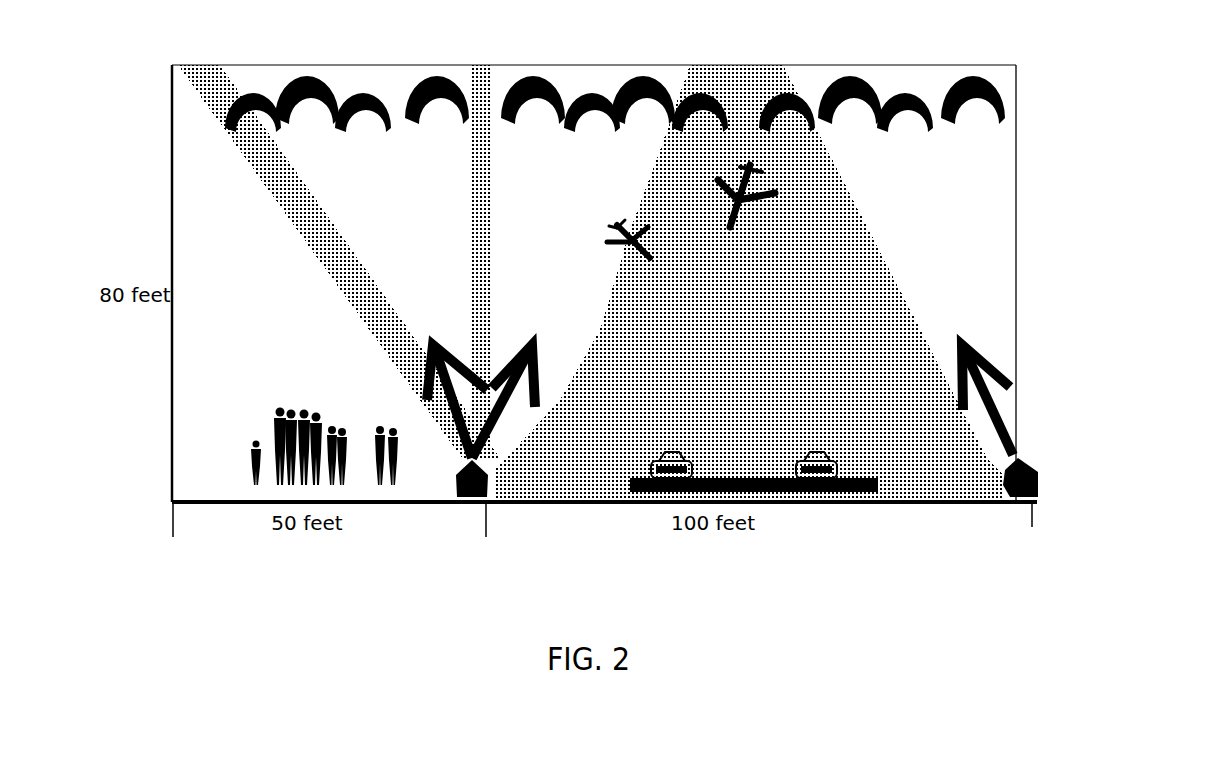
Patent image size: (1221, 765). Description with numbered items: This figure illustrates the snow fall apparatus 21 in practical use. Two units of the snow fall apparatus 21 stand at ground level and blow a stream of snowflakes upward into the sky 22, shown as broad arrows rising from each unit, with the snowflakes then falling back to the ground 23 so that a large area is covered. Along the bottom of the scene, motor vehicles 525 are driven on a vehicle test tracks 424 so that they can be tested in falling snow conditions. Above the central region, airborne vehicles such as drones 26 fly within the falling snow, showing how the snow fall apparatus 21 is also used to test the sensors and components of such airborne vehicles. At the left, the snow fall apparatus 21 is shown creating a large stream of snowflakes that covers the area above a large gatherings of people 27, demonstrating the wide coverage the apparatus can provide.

The snow fall apparatus 21 is at (453, 498).
The sky 22 is at (500, 344).
The ground 23 is at (430, 72).
The drones 26 is at (770, 198).
The gatherings of people 27 is at (247, 448).
The vehicle test tracks 424 is at (860, 492).
The motor vehicles 525 is at (828, 492).